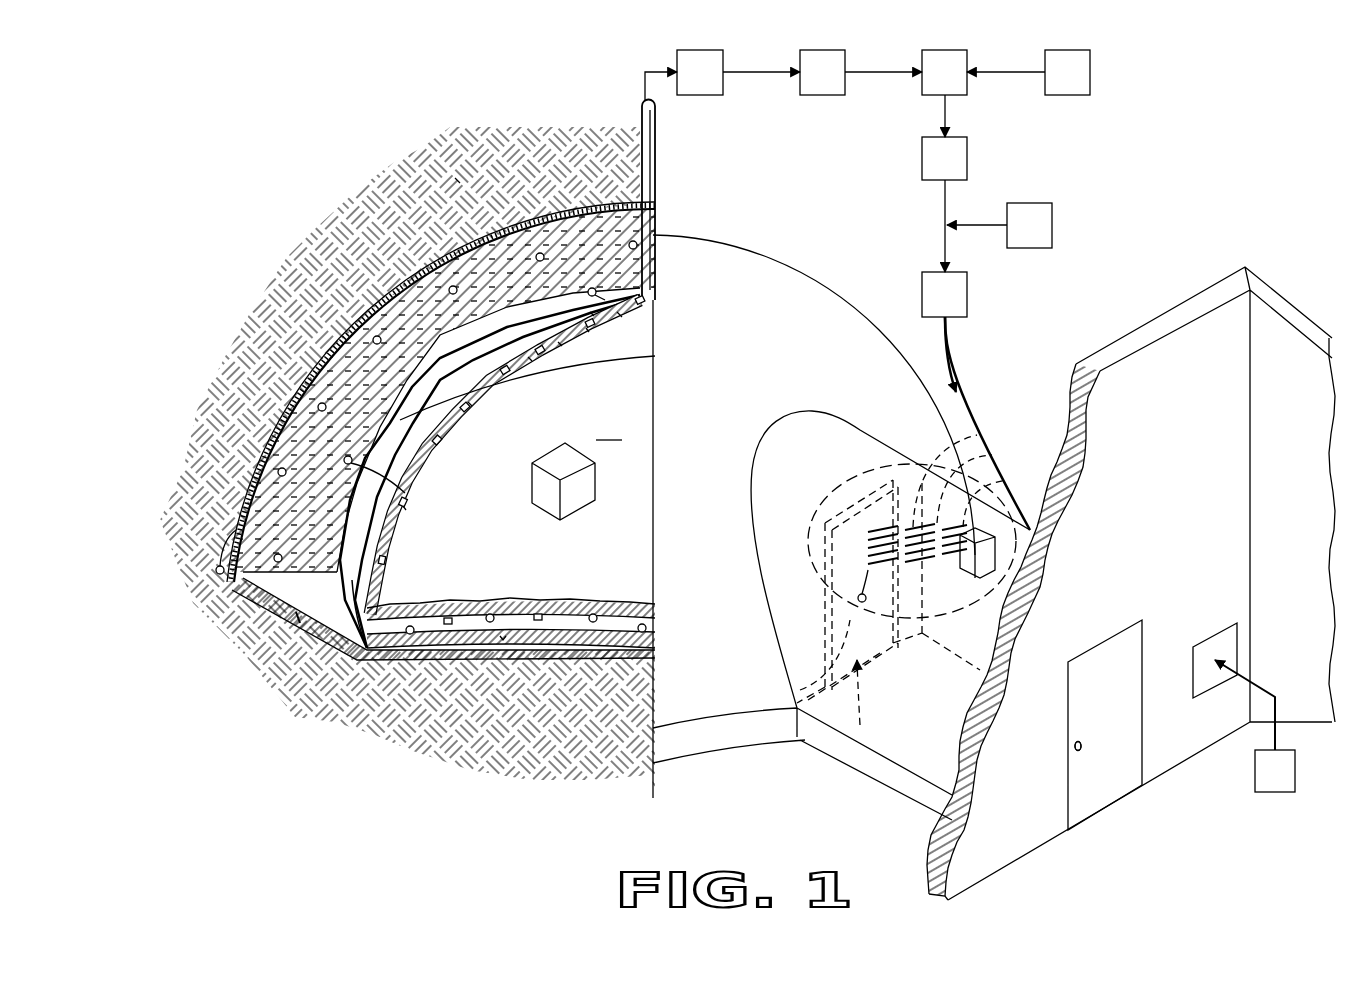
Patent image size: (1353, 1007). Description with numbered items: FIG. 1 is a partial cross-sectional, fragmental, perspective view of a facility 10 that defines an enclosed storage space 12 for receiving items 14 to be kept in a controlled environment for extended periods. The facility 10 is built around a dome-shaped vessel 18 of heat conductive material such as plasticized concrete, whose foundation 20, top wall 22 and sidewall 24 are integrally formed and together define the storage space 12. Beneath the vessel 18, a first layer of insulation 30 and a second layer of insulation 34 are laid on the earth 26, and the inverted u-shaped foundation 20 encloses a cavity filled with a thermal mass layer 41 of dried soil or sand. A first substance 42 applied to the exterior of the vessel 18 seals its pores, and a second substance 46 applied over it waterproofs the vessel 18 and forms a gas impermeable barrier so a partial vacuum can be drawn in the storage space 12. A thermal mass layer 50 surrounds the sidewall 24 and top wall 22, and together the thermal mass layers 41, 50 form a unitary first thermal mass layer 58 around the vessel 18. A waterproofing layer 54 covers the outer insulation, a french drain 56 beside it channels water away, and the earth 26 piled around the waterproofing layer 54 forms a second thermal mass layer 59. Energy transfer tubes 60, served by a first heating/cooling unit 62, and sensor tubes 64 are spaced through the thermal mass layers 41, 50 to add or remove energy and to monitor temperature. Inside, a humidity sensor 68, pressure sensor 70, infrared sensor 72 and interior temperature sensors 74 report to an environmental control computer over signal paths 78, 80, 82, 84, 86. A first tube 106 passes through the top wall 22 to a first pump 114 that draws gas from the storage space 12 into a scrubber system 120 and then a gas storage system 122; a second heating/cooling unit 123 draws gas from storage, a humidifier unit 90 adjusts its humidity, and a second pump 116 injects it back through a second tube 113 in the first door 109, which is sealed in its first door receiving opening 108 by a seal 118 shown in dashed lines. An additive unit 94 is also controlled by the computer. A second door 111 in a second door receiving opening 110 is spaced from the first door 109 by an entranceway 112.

The facility 10 is at (810, 240).
The enclosed storage space 12 is at (608, 430).
The items 14 is at (583, 507).
The vessel 18 is at (592, 315).
The foundation 20 is at (382, 653).
The top wall 22 is at (620, 315).
The sidewall 24 is at (385, 545).
The earth 26 is at (360, 235).
The first layer of insulation 30 is at (300, 623).
The second layer of insulation 34 is at (323, 637).
The thermal mass layer 41 is at (562, 613).
The first substance 42 is at (372, 575).
The second substance 46 is at (418, 473).
The thermal mass layer 50 is at (500, 268).
The waterproofing layer 54 is at (283, 388).
The french drain 56 is at (220, 575).
The first thermal mass layer 58 is at (505, 640).
The second thermal mass layer 59 is at (455, 178).
The energy transfer tubes 60 is at (540, 252).
The first heating/cooling unit 62 is at (1275, 792).
The sensor tubes 64 is at (448, 618).
The humidity sensor 68 is at (470, 405).
The pressure sensor 70 is at (530, 360).
The infrared sensor 72 is at (560, 345).
The interior temperature sensors 74 is at (408, 512).
The signal path 78 is at (975, 434).
The signal path 80 is at (990, 457).
The signal path 82 is at (1000, 479).
The signal path 84 is at (867, 582).
The signal path 86 is at (858, 597).
The humidifier unit 90 is at (1030, 203).
The additive unit 94 is at (1090, 70).
The first tube 106 is at (657, 148).
The first door receiving opening 108 is at (857, 740).
The first door 109 is at (845, 655).
The second door receiving opening 110 is at (1103, 780).
The second door 111 is at (1117, 742).
The entranceway 112 is at (920, 722).
The second tube 113 is at (817, 628).
The first pump 114 is at (697, 96).
The second pump 116 is at (967, 296).
The seal 118 is at (855, 507).
The scrubber system 120 is at (825, 96).
The gas storage system 122 is at (960, 95).
The second heating/cooling unit 123 is at (967, 160).